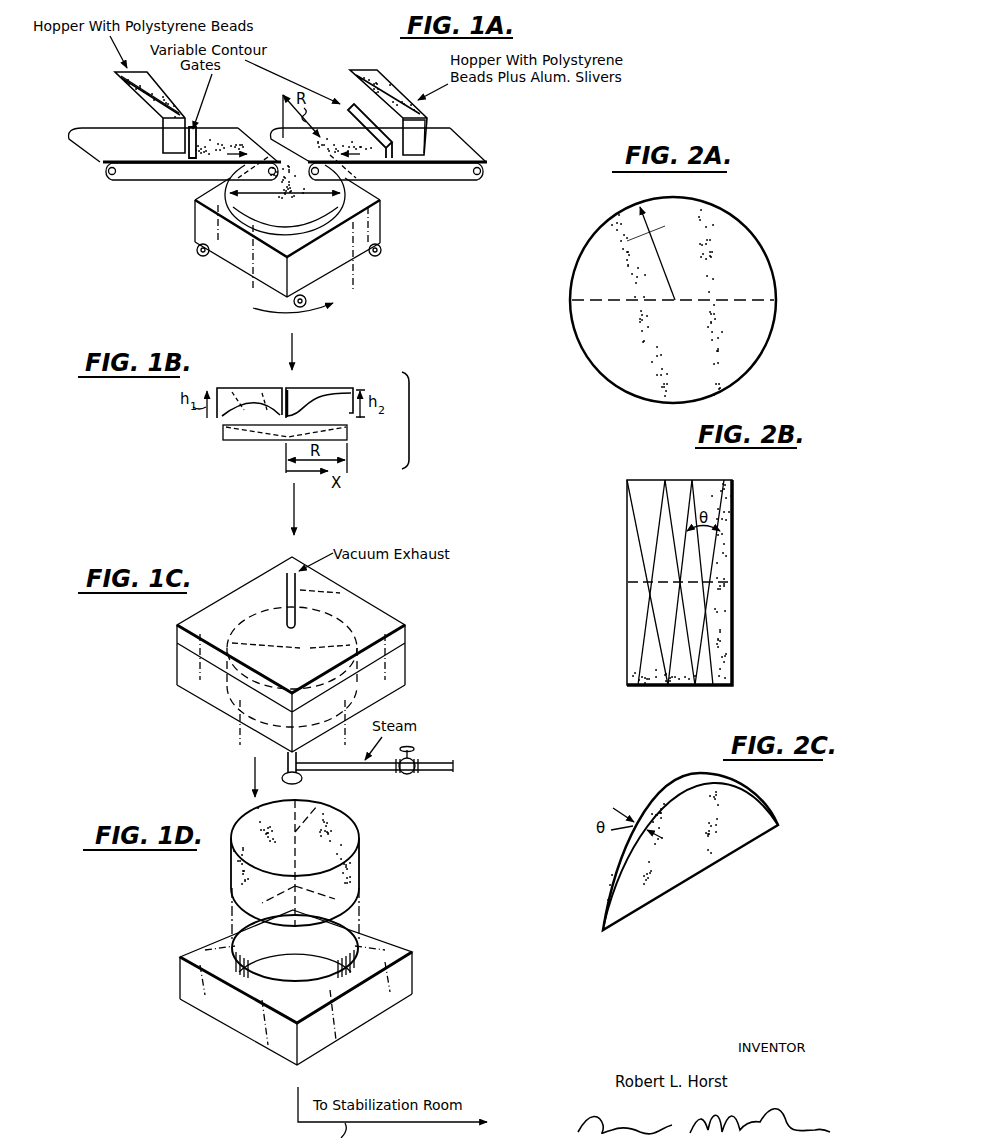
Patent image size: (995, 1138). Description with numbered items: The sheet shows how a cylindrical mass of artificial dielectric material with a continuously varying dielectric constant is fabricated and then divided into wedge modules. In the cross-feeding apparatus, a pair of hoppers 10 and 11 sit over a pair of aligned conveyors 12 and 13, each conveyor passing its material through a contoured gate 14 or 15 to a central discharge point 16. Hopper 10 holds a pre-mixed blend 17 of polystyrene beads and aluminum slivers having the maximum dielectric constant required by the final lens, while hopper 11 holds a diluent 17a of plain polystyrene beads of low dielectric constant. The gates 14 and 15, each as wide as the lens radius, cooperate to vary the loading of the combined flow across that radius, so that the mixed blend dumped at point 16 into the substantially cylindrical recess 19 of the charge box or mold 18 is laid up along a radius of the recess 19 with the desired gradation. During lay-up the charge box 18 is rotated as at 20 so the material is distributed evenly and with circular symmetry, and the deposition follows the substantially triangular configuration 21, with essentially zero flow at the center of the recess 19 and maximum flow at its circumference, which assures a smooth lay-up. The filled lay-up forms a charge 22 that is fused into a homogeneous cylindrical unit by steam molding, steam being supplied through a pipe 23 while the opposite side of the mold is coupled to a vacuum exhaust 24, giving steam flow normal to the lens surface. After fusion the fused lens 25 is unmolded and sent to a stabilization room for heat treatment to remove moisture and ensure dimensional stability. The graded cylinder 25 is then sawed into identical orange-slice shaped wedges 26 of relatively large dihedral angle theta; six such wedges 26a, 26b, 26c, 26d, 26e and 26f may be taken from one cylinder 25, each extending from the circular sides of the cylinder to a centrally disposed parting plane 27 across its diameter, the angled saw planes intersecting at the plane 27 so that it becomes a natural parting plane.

In FIG. 1A, the hopper 10 is at (415, 137).
In FIG. 1A, the hopper 11 is at (123, 92).
In FIG. 1A, the conveyor 12 is at (463, 153).
In FIG. 1A, the conveyor 13 is at (113, 147).
In FIG. 1A, the contoured gate 14 is at (384, 160).
In FIG. 1B, the contoured gate 14 is at (257, 389).
In FIG. 1A, the contoured gate 15 is at (199, 162).
In FIG. 1B, the contoured gate 15 is at (317, 393).
In FIG. 1A, the central discharge point 16 is at (262, 130).
In FIG. 1A, the pre-mixed blend 17 is at (377, 88).
In FIG. 1A, the diluent 17a is at (147, 105).
In FIG. 1A, the charge box 18 is at (247, 260).
In FIG. 1A, the cylindrical recess 19 is at (240, 202).
In FIG. 1A, the rotation 20 is at (311, 310).
In FIG. 1B, the triangular deposition configuration 21 is at (348, 434).
In FIG. 1C, the charge 22 is at (347, 643).
In FIG. 1C, the steam pipe 23 is at (298, 761).
In FIG. 1C, the vacuum exhaust 24 is at (284, 593).
In FIG. 1D, the fused lens 25 is at (347, 870).
In FIG. 2A, the fused lens 25 is at (737, 252).
In FIG. 2B, the fused lens 25 is at (727, 568).
In FIG. 2C, the wedge 26 is at (747, 826).
In FIG. 2B, the wedge 26a is at (648, 486).
In FIG. 2B, the wedge 26b is at (679, 492).
In FIG. 2B, the wedge 26c is at (703, 488).
In FIG. 2B, the wedge 26d is at (655, 670).
In FIG. 2B, the wedge 26e is at (683, 675).
In FIG. 2B, the wedge 26f is at (712, 675).
In FIG. 1D, the parting plane 27 is at (318, 806).
In FIG. 2A, the parting plane 27 is at (758, 294).
In FIG. 2B, the parting plane 27 is at (712, 583).